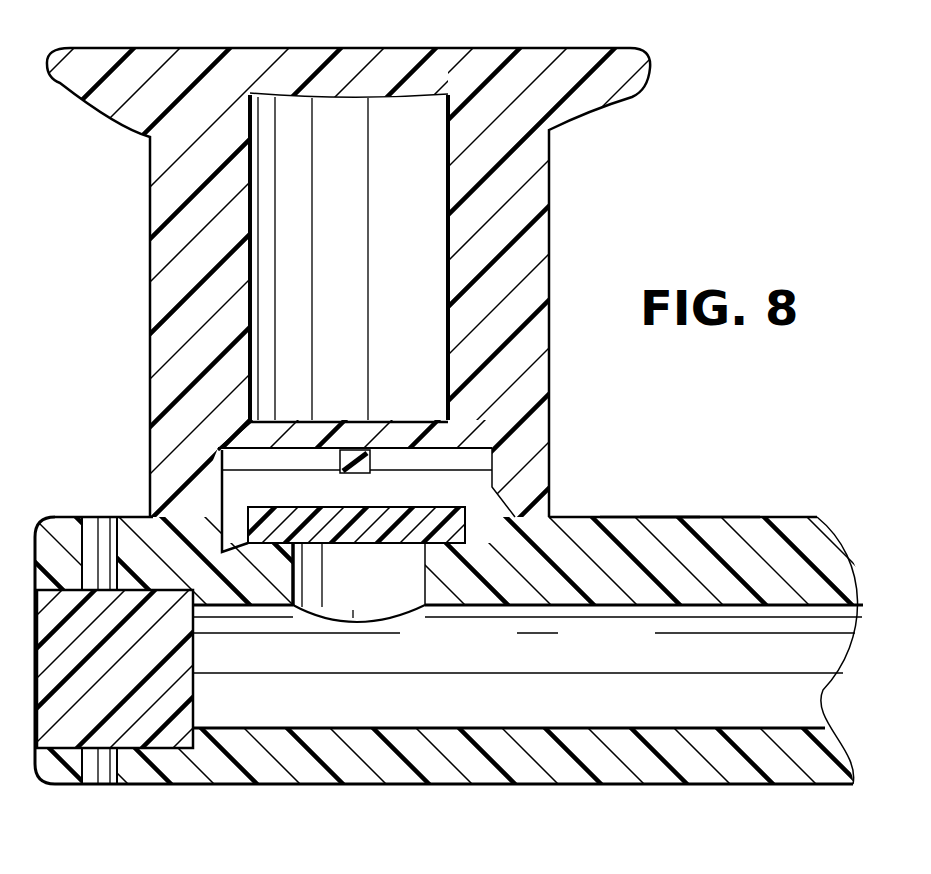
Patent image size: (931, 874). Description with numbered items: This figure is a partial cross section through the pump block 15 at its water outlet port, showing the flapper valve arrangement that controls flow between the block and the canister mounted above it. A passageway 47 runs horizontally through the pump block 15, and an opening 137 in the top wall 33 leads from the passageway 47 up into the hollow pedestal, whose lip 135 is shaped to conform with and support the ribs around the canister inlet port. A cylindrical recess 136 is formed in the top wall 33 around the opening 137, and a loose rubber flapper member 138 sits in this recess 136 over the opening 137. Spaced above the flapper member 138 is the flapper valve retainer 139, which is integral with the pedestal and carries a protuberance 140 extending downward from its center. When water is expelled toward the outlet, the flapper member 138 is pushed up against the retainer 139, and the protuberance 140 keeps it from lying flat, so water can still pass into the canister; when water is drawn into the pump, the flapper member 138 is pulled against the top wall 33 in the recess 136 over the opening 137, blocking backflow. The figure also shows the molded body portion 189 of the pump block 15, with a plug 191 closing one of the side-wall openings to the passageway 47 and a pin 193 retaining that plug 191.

The pump block 15 is at (760, 532).
The top wall 33 is at (740, 520).
The passageway 47 is at (355, 130).
The lip 135 is at (570, 86).
The cylindrical recess 136 is at (478, 532).
The opening 137 is at (393, 582).
The flapper member 138 is at (347, 546).
The flapper valve retainer 139 is at (334, 431).
The protuberance 140 is at (370, 474).
The body portion 189 is at (667, 528).
The plug 191 is at (78, 710).
The pin 193 is at (107, 770).